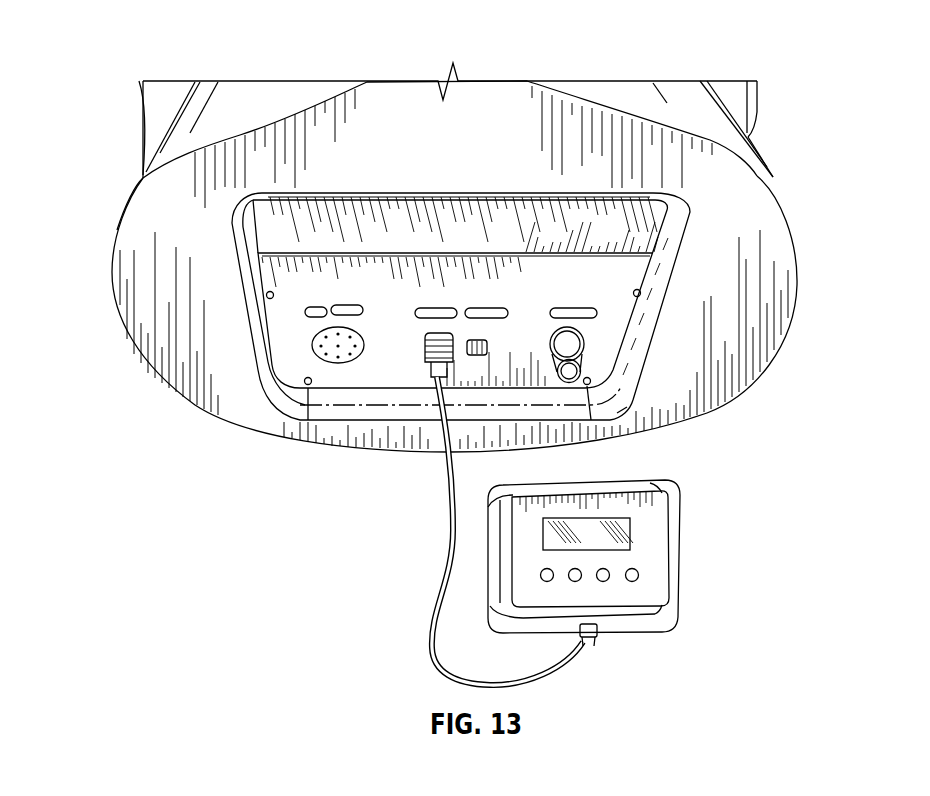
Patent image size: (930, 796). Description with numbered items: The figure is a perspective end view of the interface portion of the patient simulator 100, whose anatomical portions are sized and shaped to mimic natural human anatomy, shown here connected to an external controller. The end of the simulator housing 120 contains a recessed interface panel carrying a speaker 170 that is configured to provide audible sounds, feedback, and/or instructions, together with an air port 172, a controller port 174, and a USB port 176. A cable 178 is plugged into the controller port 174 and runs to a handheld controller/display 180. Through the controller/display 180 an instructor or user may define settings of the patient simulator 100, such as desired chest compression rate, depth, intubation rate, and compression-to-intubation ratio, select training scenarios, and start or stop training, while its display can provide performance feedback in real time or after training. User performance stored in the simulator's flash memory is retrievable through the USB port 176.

The patient simulator 100 is at (143, 31).
The hood / hair dryer housing 120 is at (258, 103).
The speaker 170 is at (338, 327).
The air port 172 is at (553, 333).
The controller port 174 is at (438, 332).
The USB port 176 is at (490, 347).
The cable 178 is at (447, 560).
The controller/display 180 is at (643, 624).